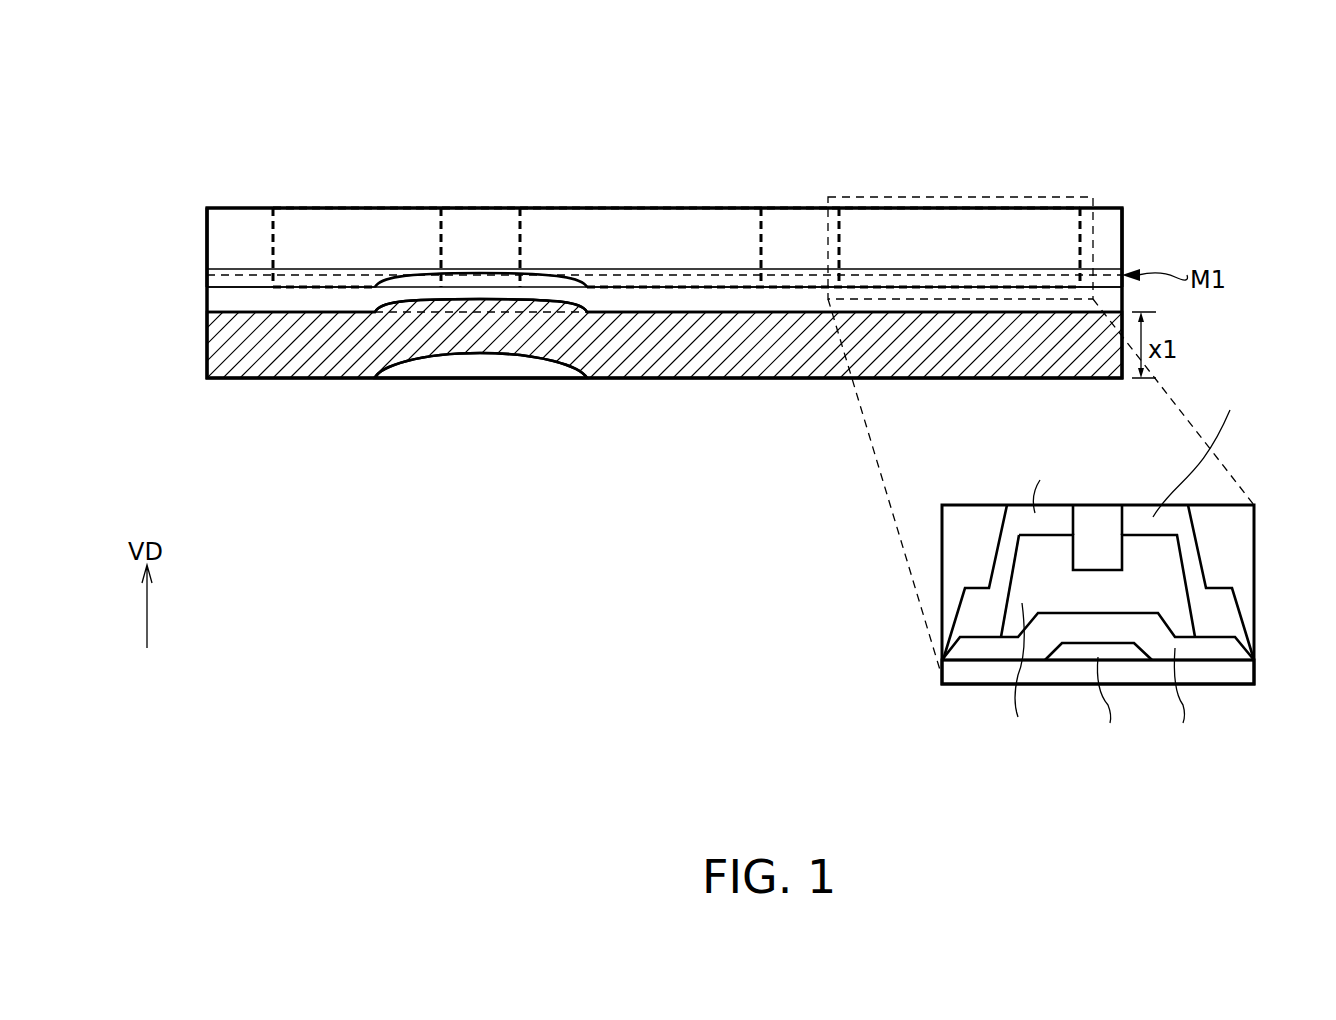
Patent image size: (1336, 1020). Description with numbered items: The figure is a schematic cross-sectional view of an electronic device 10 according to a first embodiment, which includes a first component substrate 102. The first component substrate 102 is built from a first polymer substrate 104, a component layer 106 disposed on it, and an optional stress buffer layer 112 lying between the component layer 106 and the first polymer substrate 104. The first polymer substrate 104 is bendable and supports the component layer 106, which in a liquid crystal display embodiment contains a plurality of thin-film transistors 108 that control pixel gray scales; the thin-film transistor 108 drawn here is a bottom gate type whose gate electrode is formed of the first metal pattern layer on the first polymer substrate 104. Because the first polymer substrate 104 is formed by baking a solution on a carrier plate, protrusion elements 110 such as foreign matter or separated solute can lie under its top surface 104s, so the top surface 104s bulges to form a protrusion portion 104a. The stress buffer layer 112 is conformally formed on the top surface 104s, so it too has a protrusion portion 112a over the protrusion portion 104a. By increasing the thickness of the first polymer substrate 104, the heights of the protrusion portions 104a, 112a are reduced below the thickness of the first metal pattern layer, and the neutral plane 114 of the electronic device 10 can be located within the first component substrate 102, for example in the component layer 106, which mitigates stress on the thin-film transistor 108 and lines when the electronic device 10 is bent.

The electronic device 10 is at (1164, 130).
The first component substrate 102 is at (130, 230).
The first polymer substrate 104 is at (220, 350).
The protrusion portion 104a is at (442, 312).
The top surface 104s is at (732, 313).
The component layer 106 is at (190, 208).
The thin-film transistor 108 is at (445, 230).
The protrusion element 110 is at (512, 370).
The stress buffer layer 112 is at (218, 303).
The protrusion portion 112a is at (530, 282).
The neutral plane 114 is at (247, 275).